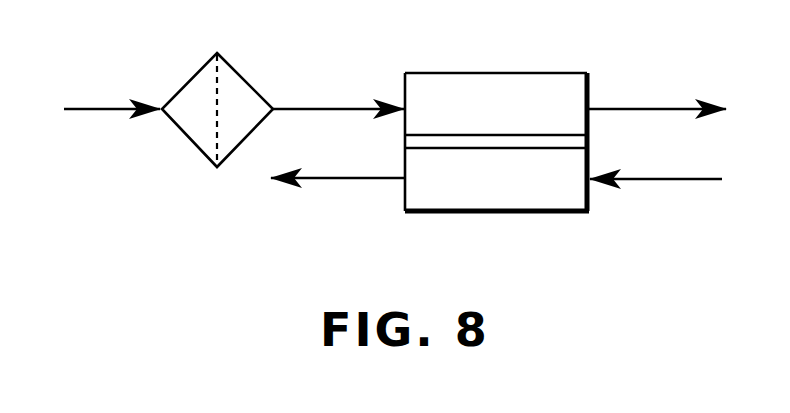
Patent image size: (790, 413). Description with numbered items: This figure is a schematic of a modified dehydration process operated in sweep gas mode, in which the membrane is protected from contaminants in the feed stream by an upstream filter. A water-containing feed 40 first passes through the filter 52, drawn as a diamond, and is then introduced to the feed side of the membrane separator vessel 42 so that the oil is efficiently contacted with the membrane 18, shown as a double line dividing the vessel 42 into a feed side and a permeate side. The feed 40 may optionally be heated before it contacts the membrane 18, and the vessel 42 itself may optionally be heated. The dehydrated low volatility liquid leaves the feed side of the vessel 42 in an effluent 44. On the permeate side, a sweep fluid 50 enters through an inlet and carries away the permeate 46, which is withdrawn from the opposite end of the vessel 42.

The filter 52 is at (185, 83).
The feed 40 is at (340, 108).
The membrane separator vessel 42 is at (510, 220).
The membrane 18 is at (504, 128).
The effluent 44 is at (640, 108).
The permeate 46 is at (333, 180).
The sweep fluid 50 is at (662, 181).